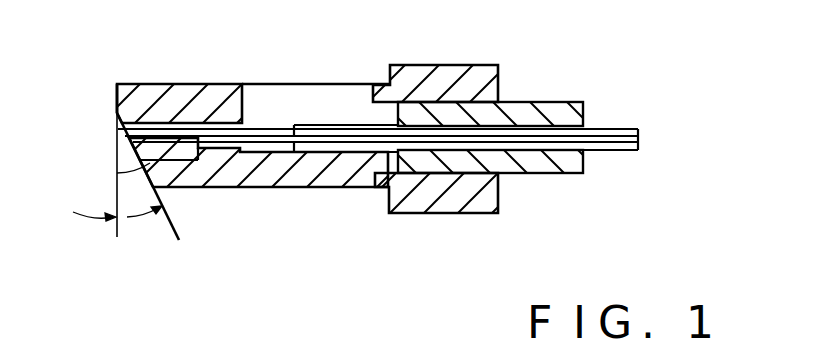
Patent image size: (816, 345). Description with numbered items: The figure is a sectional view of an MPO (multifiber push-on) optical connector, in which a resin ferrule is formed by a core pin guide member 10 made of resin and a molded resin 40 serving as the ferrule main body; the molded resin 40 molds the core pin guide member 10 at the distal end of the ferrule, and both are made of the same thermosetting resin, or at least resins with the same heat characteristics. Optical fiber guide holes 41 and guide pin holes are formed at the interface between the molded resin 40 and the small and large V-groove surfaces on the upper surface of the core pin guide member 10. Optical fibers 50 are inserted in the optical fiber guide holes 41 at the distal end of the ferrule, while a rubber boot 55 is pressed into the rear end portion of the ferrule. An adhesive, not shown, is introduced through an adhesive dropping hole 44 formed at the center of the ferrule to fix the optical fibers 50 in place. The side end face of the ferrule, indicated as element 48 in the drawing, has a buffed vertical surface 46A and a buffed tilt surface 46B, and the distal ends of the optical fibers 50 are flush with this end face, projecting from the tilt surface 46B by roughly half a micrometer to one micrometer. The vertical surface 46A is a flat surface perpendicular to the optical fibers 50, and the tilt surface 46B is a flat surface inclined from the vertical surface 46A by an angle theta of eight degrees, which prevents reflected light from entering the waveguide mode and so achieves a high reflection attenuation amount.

The core pin guide member 10 is at (183, 160).
The molded resin (ferrule main body) 40 is at (208, 97).
The optical fiber guide hole 41 is at (157, 127).
The adhesive dropping hole 44 is at (346, 102).
The buffed vertical surface 46A is at (117, 97).
The buffed tilt surface 46B is at (117, 156).
The end face 48 is at (277, 339).
The optical fiber 50 is at (273, 128).
The rubber boot 55 is at (572, 112).